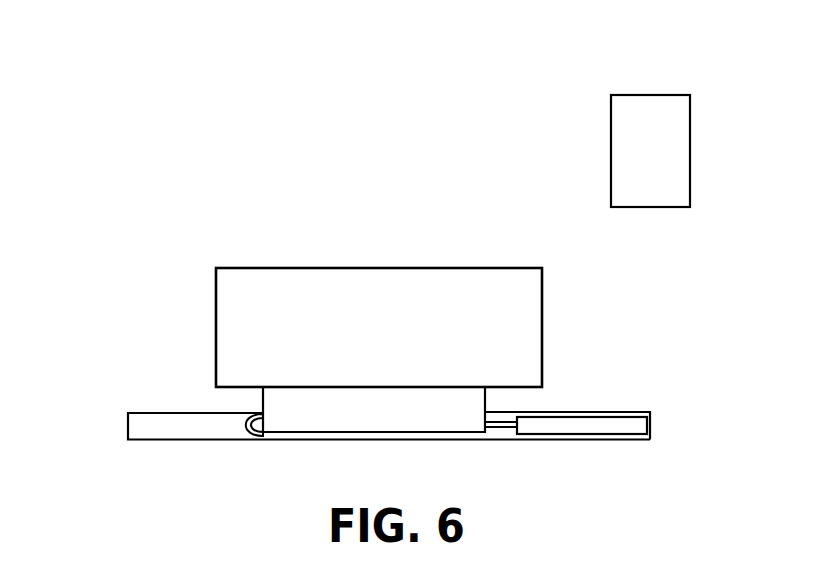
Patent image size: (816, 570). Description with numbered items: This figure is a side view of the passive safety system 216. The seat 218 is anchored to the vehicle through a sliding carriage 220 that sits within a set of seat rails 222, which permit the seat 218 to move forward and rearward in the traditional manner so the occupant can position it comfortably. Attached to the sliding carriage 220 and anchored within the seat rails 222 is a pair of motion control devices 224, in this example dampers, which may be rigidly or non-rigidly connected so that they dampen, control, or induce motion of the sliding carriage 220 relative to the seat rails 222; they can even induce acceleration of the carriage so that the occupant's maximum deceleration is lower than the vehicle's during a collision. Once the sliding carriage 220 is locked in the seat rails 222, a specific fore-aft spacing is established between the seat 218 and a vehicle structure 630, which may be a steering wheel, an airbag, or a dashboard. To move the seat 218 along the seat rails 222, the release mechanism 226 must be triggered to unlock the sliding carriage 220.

The passive safety system 216 is at (135, 57).
The seat 218 is at (378, 267).
The sliding carriage 220 is at (343, 432).
The seat rails 222 is at (155, 412).
The motion control devices 224 is at (550, 412).
The release mechanism 226 is at (257, 440).
The vehicle structure 630 is at (670, 95).